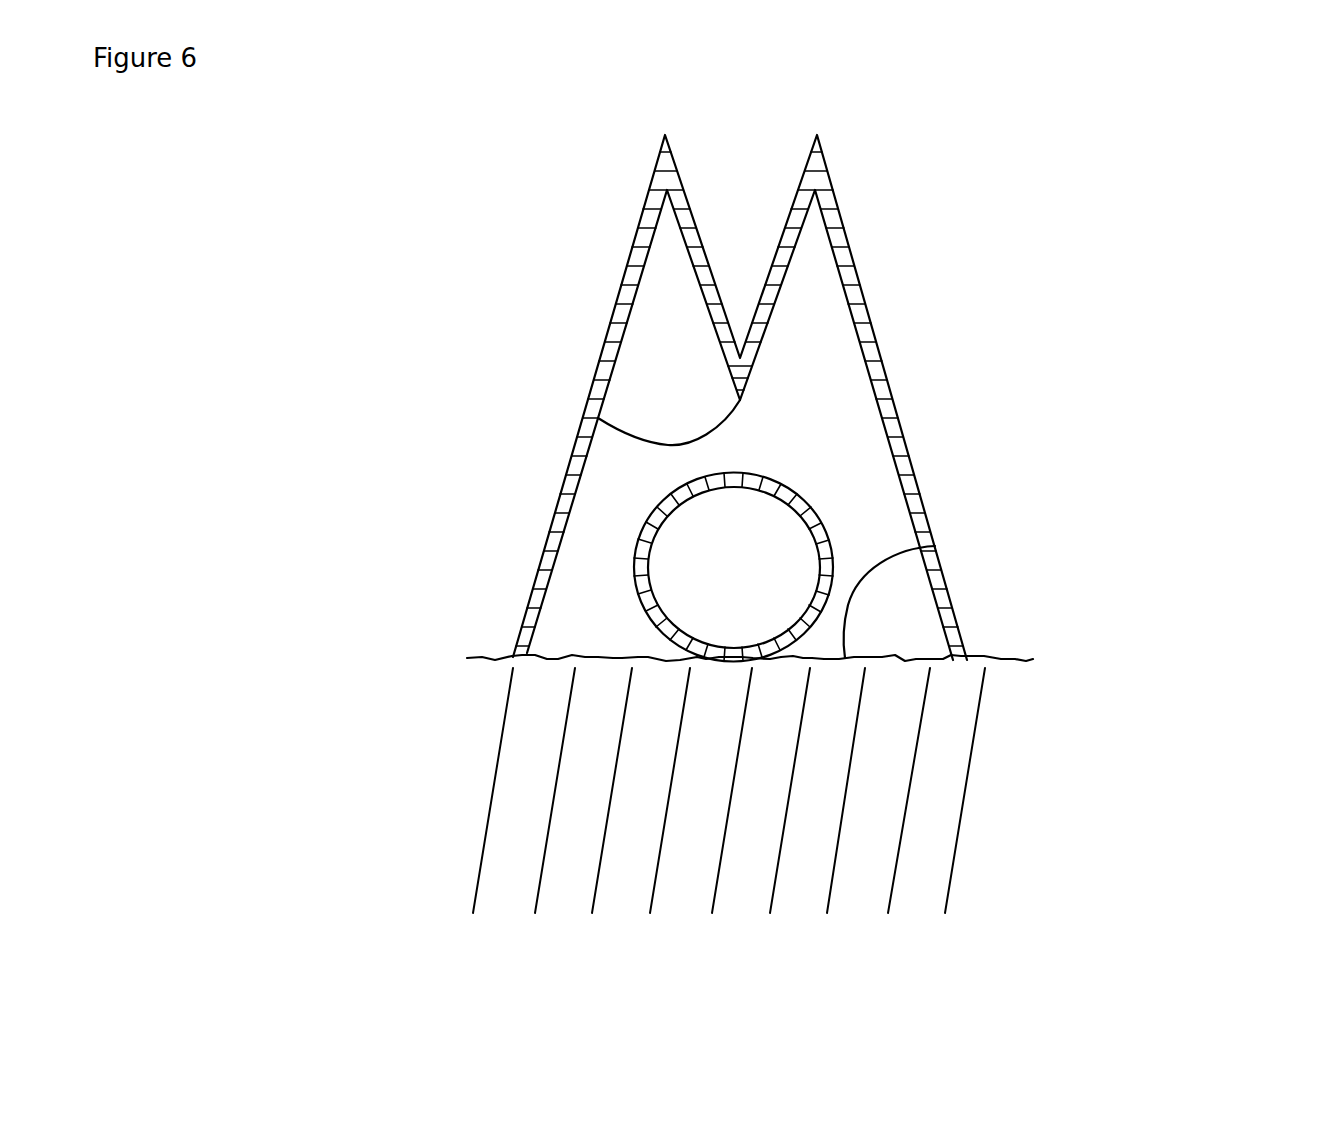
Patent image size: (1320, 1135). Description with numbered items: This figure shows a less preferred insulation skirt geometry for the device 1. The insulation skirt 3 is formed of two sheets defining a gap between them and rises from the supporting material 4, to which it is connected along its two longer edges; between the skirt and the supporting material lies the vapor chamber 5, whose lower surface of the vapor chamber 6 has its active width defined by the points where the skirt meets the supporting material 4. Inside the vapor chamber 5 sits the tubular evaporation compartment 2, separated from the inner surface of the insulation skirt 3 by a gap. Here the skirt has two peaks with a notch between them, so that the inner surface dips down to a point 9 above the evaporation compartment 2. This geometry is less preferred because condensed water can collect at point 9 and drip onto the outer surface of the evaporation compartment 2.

The device 1 is at (873, 386).
The evaporation compartment 2 is at (820, 515).
The insulation skirt 3 is at (837, 228).
The supporting material 4 is at (930, 742).
The vapor chamber 5 is at (800, 410).
The lower surface of the vapor chamber 6 is at (920, 547).
The point where condensed water collects 9 is at (652, 445).